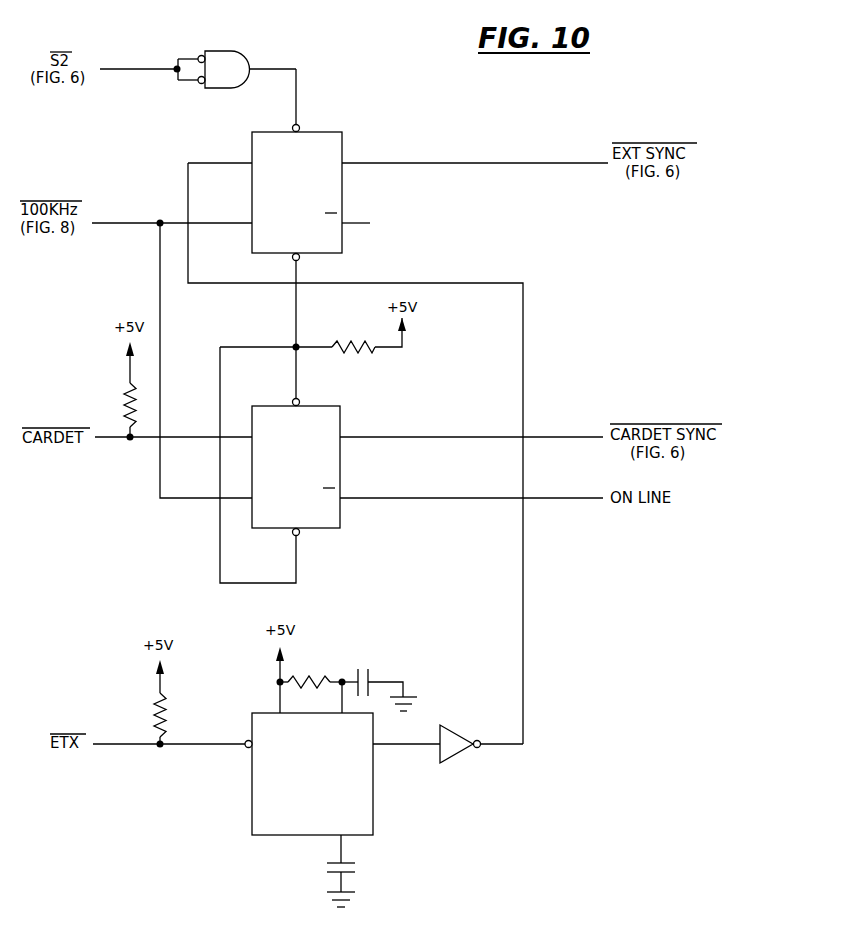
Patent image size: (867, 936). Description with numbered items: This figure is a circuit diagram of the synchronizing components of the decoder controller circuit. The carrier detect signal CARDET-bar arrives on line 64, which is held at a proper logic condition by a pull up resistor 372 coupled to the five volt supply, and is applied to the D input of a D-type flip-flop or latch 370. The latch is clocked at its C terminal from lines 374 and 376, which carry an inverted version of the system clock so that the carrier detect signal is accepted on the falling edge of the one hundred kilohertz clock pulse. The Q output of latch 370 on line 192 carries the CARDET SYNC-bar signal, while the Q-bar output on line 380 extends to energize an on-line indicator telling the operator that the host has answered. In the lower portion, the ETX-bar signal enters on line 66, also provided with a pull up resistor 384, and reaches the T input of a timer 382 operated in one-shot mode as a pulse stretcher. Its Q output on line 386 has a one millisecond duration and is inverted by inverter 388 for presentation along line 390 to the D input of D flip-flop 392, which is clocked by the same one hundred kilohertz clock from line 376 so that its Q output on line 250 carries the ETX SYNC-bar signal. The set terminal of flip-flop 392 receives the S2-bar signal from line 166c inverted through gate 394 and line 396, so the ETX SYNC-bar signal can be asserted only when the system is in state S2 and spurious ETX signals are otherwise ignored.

The line 166c is at (150, 70).
The gate 394 is at (243, 52).
The line 396 is at (297, 92).
The D flip-flop 392 is at (342, 136).
The line 250 is at (478, 163).
The line 376 is at (126, 223).
The line 374 is at (161, 395).
The line 390 is at (524, 604).
The pull up resistor 372 is at (123, 398).
The line 64 is at (143, 438).
The flip-flop or latch 370 is at (340, 408).
The line 192 is at (438, 437).
The line 380 is at (430, 498).
The pull up resistor 384 is at (163, 705).
The line 66 is at (126, 745).
The timer 382 is at (373, 816).
The line 386 is at (403, 745).
The inverter 388 is at (455, 730).